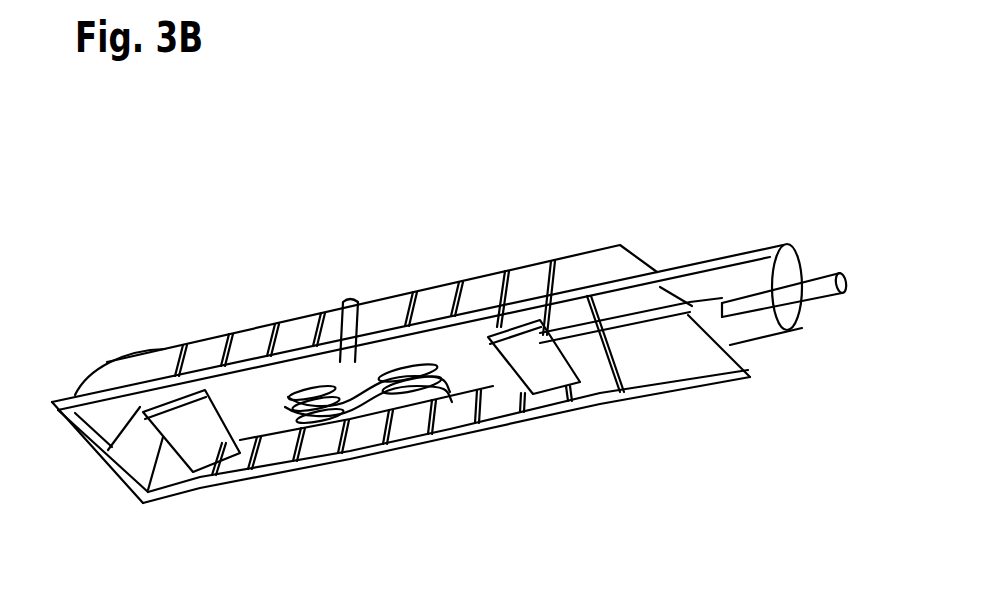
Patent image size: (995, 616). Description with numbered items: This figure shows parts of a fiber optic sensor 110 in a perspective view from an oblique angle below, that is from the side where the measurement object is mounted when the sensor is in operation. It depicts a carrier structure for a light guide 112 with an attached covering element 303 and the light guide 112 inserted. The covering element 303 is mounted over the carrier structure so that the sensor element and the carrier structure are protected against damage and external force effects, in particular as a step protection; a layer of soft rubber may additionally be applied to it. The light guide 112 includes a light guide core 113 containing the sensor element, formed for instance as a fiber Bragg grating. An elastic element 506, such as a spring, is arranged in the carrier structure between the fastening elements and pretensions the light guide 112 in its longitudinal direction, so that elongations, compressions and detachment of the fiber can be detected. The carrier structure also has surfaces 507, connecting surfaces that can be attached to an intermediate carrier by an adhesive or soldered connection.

The fiber optic sensor 110 is at (187, 247).
The covering element 303 is at (255, 343).
The elastic element 506 is at (349, 300).
The surfaces 507 is at (212, 470).
The light guide core 113 is at (678, 318).
The light guide 112 is at (822, 278).